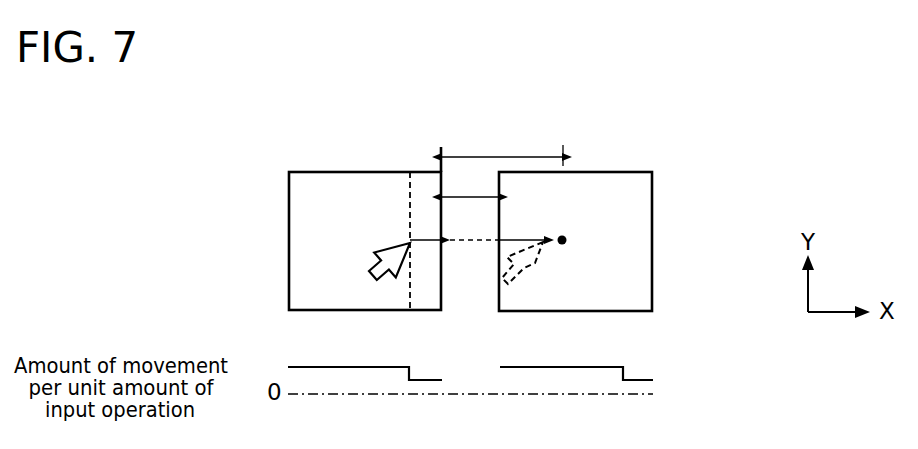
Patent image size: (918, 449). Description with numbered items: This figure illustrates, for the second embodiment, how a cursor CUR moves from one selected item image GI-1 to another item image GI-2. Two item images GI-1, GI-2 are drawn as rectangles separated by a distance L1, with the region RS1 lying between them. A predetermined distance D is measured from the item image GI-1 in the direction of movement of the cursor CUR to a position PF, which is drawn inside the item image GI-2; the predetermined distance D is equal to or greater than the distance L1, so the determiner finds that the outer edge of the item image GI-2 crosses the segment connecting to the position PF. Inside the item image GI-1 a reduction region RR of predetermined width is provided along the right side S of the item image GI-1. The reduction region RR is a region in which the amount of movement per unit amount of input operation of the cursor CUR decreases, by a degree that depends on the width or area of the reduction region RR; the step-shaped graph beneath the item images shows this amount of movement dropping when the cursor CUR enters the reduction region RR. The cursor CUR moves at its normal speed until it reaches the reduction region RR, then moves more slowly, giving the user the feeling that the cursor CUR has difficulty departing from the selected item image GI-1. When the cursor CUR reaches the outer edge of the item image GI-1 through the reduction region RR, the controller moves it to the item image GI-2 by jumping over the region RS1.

The item image GI-1 is at (289, 225).
The item image GI-2 is at (652, 224).
The cursor CUR is at (369, 272).
The position PF is at (563, 238).
The predetermined distance D is at (502, 149).
The right side S is at (442, 191).
The distance L1 is at (470, 214).
The reduction region RR is at (433, 302).
The region RS1 is at (470, 272).